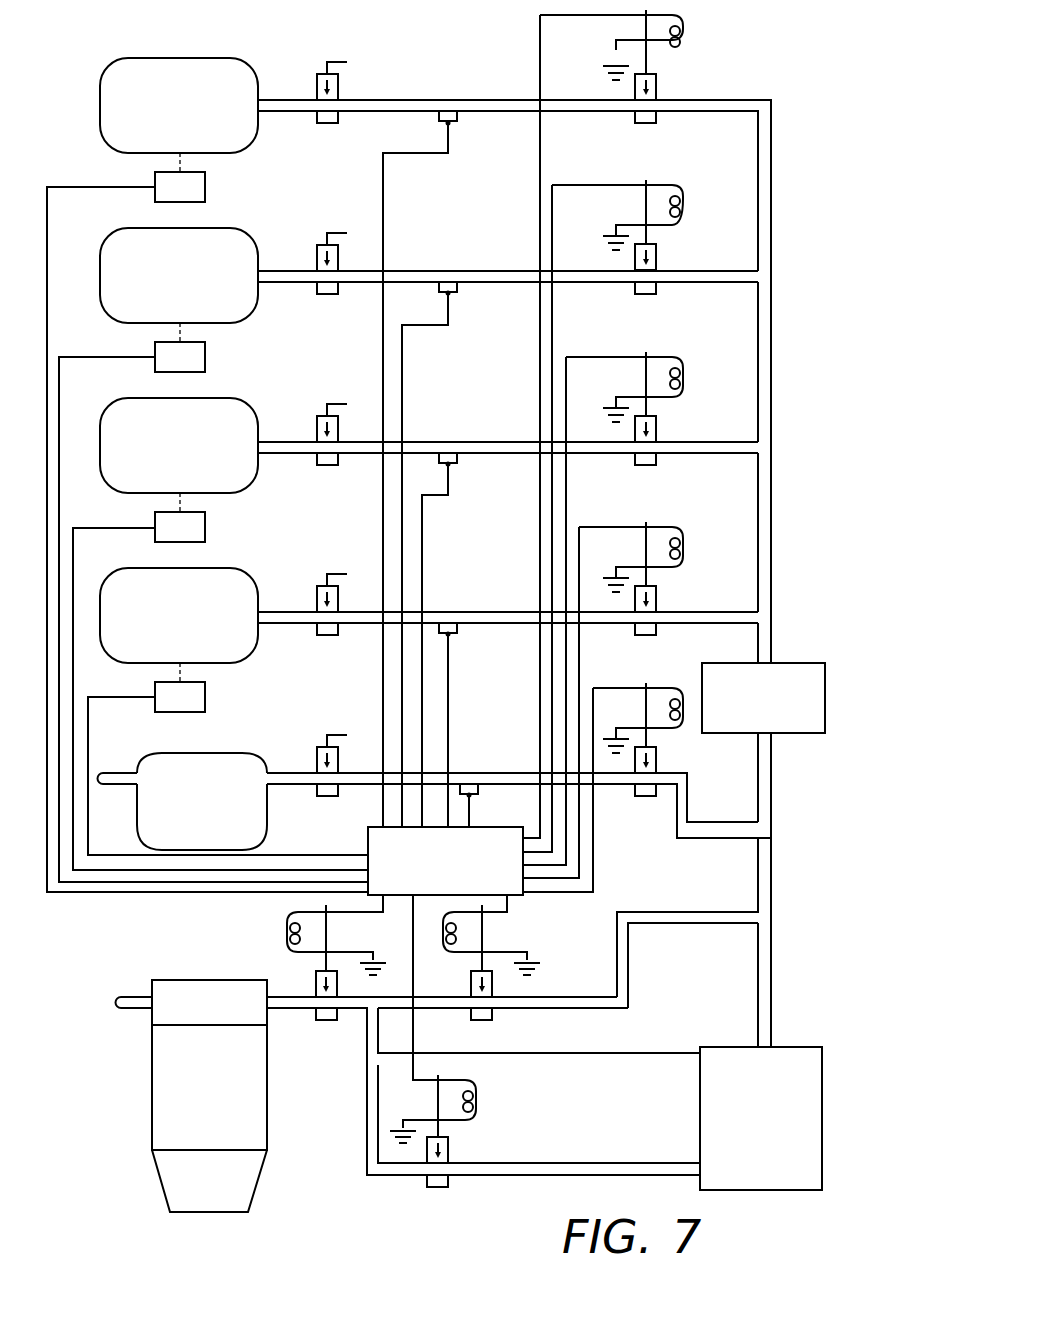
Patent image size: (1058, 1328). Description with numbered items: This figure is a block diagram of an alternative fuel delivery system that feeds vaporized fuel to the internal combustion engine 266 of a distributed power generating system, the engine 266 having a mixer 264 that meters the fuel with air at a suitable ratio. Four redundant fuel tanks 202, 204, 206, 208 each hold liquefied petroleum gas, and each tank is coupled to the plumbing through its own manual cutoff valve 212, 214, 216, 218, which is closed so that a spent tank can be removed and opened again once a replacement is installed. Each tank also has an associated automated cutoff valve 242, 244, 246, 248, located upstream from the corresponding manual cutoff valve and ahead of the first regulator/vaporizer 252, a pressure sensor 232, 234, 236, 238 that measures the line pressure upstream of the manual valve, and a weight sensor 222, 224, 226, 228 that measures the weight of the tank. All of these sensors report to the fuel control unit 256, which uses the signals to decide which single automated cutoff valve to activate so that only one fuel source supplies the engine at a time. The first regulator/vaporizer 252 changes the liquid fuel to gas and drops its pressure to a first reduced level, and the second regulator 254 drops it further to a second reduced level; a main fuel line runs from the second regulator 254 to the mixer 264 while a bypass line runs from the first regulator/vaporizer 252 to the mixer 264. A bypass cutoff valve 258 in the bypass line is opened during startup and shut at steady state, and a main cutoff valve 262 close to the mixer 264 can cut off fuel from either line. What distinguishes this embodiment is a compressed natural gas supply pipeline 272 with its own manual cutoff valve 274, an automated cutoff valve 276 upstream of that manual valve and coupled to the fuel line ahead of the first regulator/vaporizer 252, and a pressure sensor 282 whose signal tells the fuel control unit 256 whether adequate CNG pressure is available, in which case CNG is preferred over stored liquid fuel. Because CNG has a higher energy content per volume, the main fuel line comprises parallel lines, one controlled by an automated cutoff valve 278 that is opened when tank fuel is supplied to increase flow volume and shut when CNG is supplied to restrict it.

The fuel tank 202 is at (156, 58).
The fuel tank 204 is at (152, 228).
The fuel tank 206 is at (152, 398).
The fuel tank 208 is at (165, 568).
The manual cutoff valve 212 is at (319, 73).
The manual cutoff valve 214 is at (319, 244).
The manual cutoff valve 216 is at (319, 415).
The manual cutoff valve 218 is at (319, 585).
The weight sensor 222 is at (205, 188).
The weight sensor 224 is at (205, 358).
The weight sensor 226 is at (205, 528).
The weight sensor 228 is at (205, 697).
The pressure sensor 232 is at (449, 126).
The pressure sensor 234 is at (449, 296).
The pressure sensor 236 is at (449, 466).
The pressure sensor 238 is at (458, 628).
The automated cutoff valve 242 is at (657, 88).
The automated cutoff valve 244 is at (657, 258).
The automated cutoff valve 246 is at (657, 428).
The automated cutoff valve 248 is at (657, 598).
The first regulator/vaporizer 252 is at (788, 663).
The second regulator 254 is at (786, 1047).
The fuel control unit 256 is at (368, 843).
The bypass cutoff valve 258 is at (492, 1020).
The main cutoff valve 262 is at (327, 1020).
The mixer 264 is at (192, 980).
The internal combustion engine 266 is at (152, 1128).
The CNG supply pipeline 272 is at (185, 753).
The manual cutoff valve 274 is at (313, 746).
The automated cutoff valve 276 is at (657, 762).
The automated cutoff valve 278 is at (441, 1187).
The pressure sensor 282 is at (471, 797).